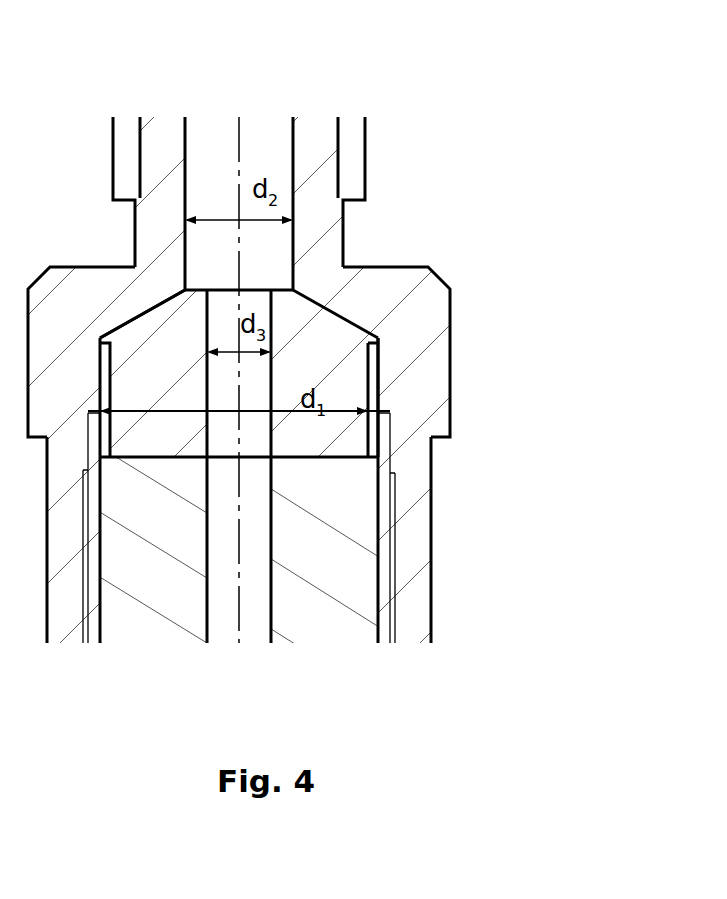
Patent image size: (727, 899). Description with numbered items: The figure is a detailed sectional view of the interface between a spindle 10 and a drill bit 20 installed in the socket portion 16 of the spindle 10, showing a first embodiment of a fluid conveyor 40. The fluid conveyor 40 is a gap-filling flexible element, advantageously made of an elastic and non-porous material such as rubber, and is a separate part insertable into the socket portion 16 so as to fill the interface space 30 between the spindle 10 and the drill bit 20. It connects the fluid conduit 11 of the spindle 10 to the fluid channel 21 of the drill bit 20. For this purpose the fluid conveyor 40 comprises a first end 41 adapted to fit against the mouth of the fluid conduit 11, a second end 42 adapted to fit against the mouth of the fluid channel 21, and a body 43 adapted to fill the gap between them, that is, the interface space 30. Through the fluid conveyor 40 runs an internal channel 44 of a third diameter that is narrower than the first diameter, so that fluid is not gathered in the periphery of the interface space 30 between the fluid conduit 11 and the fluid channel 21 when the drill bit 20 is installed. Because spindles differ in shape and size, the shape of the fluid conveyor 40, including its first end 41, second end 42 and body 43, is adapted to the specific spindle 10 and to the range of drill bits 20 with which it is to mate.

The spindle 10 is at (318, 133).
The fluid conduit 11 is at (270, 153).
The socket portion 16 is at (417, 557).
The drill bit 20 is at (338, 584).
The fluid channel 21 is at (248, 628).
The interface space 30 is at (87, 364).
The fluid conveyor 40 is at (373, 358).
The first end 41 is at (298, 288).
The second end 42 is at (313, 455).
The body 43 is at (337, 373).
The internal channel 44 is at (205, 332).